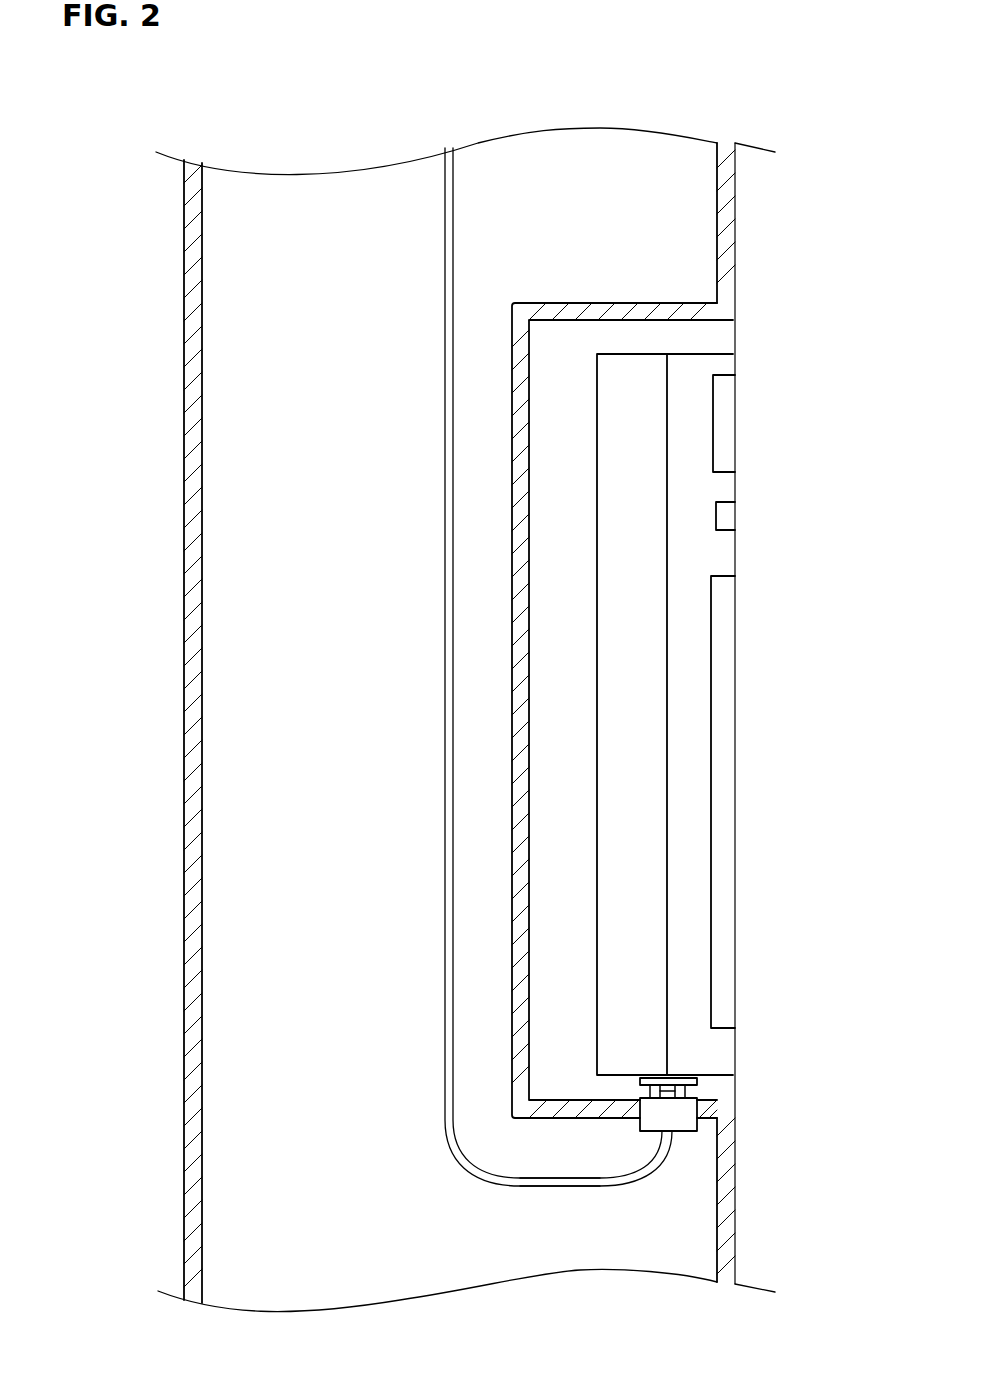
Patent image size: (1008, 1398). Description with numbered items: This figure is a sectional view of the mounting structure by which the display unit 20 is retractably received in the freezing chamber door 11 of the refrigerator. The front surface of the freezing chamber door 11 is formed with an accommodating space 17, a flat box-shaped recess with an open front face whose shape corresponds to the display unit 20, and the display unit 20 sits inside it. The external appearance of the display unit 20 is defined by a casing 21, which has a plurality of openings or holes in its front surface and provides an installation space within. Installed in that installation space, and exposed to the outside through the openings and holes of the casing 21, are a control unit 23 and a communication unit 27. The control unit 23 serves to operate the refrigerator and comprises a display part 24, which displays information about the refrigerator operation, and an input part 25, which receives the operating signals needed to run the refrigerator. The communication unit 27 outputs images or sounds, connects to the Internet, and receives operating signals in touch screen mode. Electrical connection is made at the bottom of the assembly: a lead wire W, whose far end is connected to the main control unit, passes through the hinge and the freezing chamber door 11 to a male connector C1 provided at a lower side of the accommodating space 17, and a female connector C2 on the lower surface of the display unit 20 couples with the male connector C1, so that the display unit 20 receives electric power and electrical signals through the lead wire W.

The freezing chamber door 11 is at (735, 1212).
The accommodating space 17 is at (529, 725).
The display unit 20 is at (755, 387).
The casing 21 is at (723, 1051).
The control unit 23 is at (793, 461).
The display part 24 is at (735, 458).
The input part 25 is at (765, 524).
The communication unit 27 is at (735, 805).
The male connector C1 is at (700, 1103).
The female connector C2 is at (700, 1080).
The lead wire W is at (563, 1188).